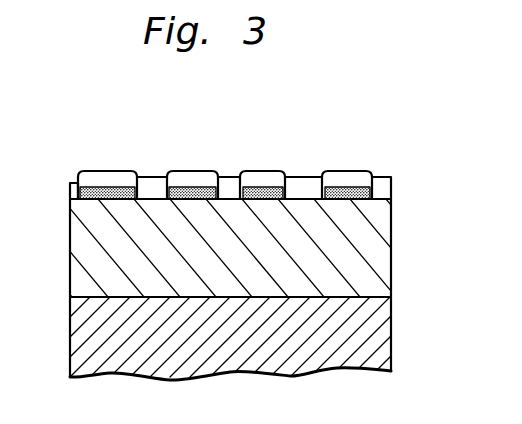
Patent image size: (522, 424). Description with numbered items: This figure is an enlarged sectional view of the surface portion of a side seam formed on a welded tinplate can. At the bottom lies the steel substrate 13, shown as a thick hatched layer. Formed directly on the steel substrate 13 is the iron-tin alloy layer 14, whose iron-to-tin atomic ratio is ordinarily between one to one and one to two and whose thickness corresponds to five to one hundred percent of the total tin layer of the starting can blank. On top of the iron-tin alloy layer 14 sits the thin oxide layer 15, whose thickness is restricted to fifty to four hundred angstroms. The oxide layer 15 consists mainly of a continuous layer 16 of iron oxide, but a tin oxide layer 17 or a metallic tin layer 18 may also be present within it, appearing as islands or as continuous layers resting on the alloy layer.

The steel substrate 13 is at (387, 336).
The iron-tin alloy layer 14 is at (374, 244).
The oxide layer 15 is at (382, 168).
The continuous layer of iron oxide 16 is at (229, 183).
The tin oxide layer 17 is at (115, 180).
The metallic tin layer 18 is at (185, 186).